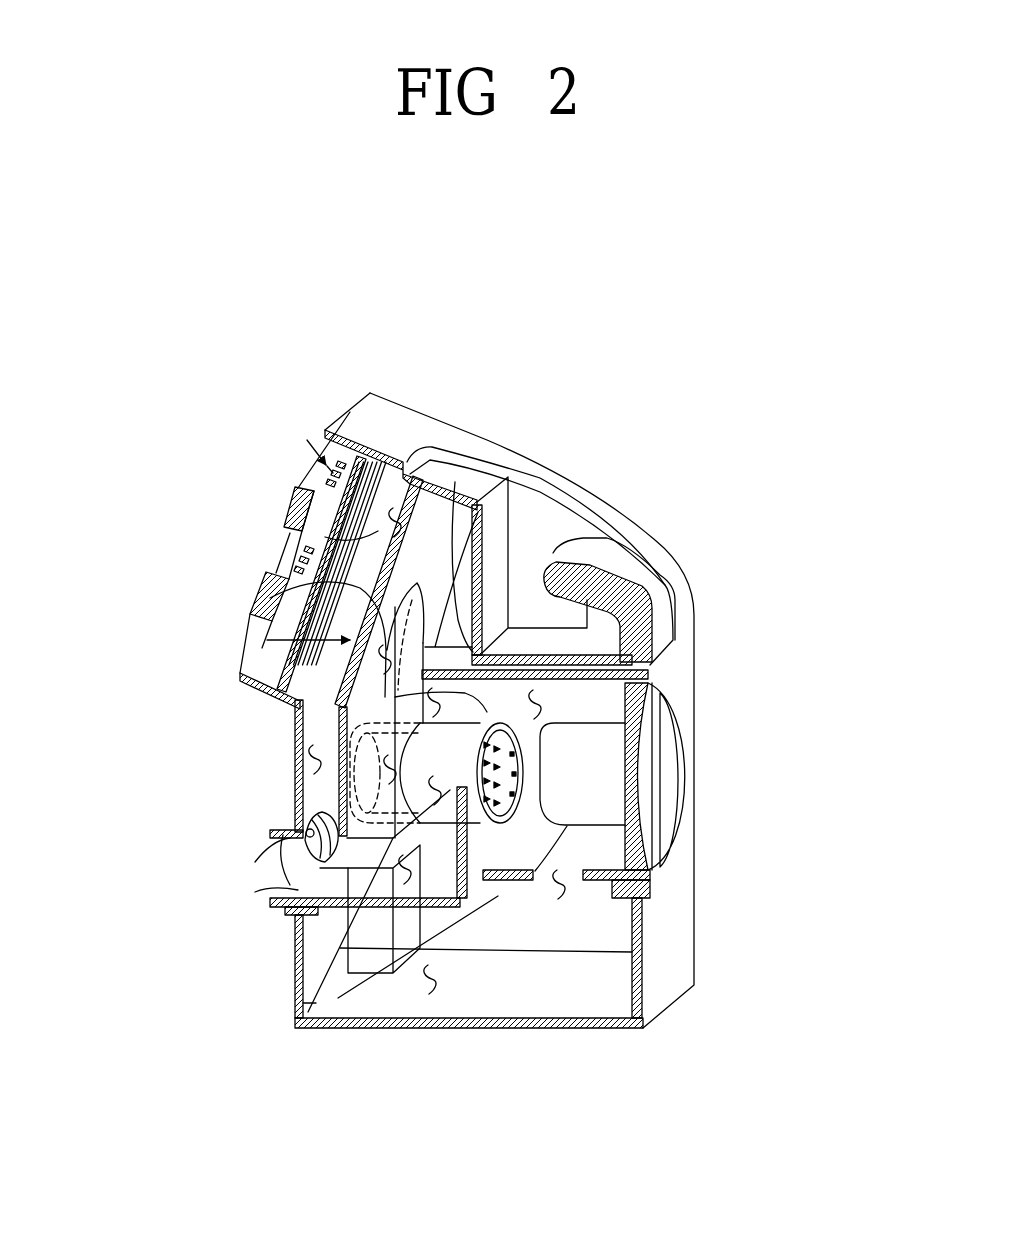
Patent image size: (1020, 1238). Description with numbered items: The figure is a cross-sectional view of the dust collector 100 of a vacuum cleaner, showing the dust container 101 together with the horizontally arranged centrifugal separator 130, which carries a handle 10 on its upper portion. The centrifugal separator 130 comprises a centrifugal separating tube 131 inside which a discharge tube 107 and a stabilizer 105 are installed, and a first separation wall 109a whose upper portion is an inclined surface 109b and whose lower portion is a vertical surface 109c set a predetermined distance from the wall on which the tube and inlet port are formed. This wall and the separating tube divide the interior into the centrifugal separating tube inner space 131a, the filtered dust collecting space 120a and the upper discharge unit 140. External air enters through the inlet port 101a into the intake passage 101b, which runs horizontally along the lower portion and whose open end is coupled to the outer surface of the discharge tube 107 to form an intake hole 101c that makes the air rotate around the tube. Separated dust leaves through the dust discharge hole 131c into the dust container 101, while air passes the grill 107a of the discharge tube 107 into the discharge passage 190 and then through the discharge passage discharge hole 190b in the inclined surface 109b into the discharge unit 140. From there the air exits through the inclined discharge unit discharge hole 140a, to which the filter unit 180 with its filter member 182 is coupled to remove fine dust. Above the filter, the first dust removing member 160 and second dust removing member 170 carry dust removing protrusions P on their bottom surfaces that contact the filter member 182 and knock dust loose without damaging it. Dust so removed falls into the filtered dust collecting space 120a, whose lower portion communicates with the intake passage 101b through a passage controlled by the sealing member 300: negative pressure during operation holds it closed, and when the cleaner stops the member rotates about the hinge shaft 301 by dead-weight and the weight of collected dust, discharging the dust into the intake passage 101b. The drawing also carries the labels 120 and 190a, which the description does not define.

The dust collector 100 is at (706, 249).
The stabilizer 105 is at (637, 962).
The dust container 101 is at (290, 1006).
The inlet port 101a is at (300, 880).
The intake passage 101b is at (295, 1003).
The intake hole 101c is at (355, 884).
The discharge tube 107 is at (300, 722).
The grill for discharge 107a is at (350, 1012).
The first separation wall 109a is at (267, 640).
The inclined surface 109b is at (262, 612).
The vertical surface 109c is at (295, 750).
The fan unit 120 is at (412, 830).
The filtered dust collecting space 120a is at (345, 735).
The centrifugal separator 130 is at (497, 705).
The centrifugal separating tube 131 is at (610, 828).
The centrifugal separating tube inner space 131a is at (550, 705).
The dust discharge hole 131c is at (588, 807).
The handle 10 is at (597, 557).
The discharge passage 190 is at (478, 655).
The filter 190a is at (390, 705).
The discharge passage discharge hole 190b is at (428, 510).
The discharge unit 140 is at (415, 487).
The discharge unit discharge hole 140a is at (307, 440).
The first dust removing member 160 is at (262, 575).
The second dust removing member 170 is at (296, 487).
The filter unit 180 is at (342, 480).
The filter member 182 is at (358, 450).
The dust removing protrusions P is at (268, 566).
The sealing member 300 is at (292, 825).
The hinge shaft 301 is at (290, 858).